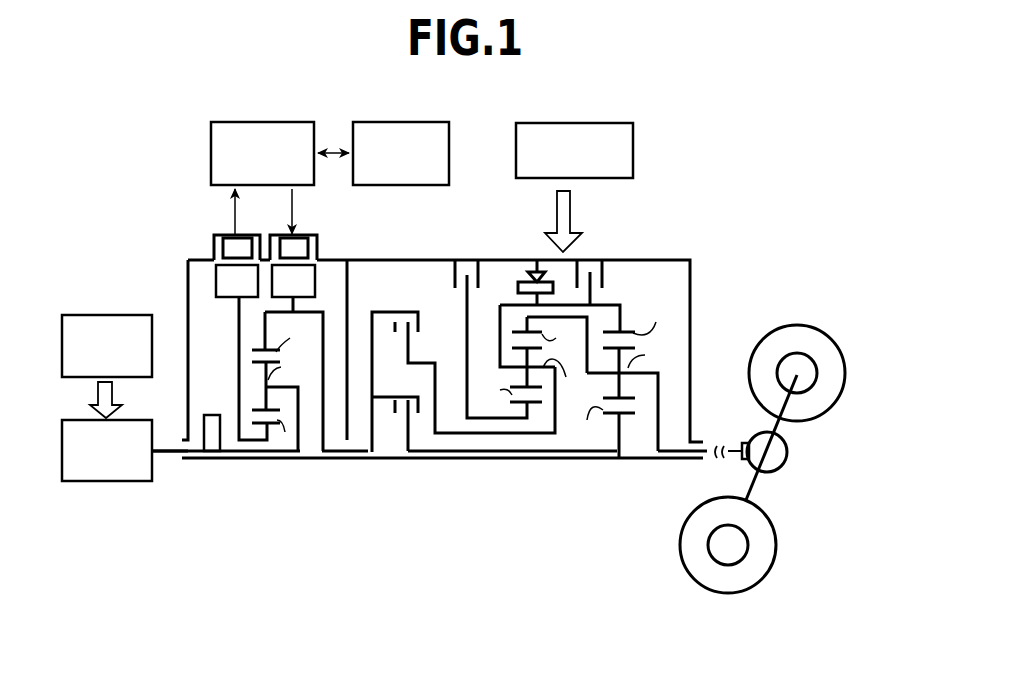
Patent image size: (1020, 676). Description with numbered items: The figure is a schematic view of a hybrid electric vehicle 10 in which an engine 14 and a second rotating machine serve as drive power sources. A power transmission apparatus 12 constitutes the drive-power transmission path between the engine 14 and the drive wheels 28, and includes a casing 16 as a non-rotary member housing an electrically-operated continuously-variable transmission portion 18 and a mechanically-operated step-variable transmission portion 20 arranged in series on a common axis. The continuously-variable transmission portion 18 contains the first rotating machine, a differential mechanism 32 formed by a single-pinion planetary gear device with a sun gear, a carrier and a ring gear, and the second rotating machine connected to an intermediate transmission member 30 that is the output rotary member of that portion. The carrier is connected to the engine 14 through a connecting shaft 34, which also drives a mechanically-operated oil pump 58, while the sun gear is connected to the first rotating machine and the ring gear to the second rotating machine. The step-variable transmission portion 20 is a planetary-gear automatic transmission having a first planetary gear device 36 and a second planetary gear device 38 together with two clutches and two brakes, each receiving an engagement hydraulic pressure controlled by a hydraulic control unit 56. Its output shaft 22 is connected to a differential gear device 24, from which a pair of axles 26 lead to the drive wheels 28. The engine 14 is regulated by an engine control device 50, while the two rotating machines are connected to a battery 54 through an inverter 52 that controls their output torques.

The vehicle 10 is at (748, 194).
The power transmission apparatus 12 is at (178, 523).
The engine 14 is at (135, 428).
The casing 16 is at (378, 258).
The continuously-variable transmission portion 18 is at (293, 508).
The step-variable transmission portion 20 is at (412, 508).
The output shaft 22 is at (706, 463).
The differential gear device 24 is at (775, 455).
The axles 26 is at (778, 427).
The drive wheels 28 is at (815, 350).
The intermediate transmission member 30 is at (323, 432).
The differential mechanism 32 is at (260, 470).
The connecting shaft 34 is at (170, 452).
The first planetary gear device 36 is at (523, 467).
The second planetary gear device 38 is at (618, 467).
The engine control device 50 is at (140, 314).
The inverter 52 is at (303, 179).
The battery 54 is at (373, 179).
The hydraulic control unit 56 is at (611, 179).
The mechanically-operated oil pump 58 is at (212, 416).